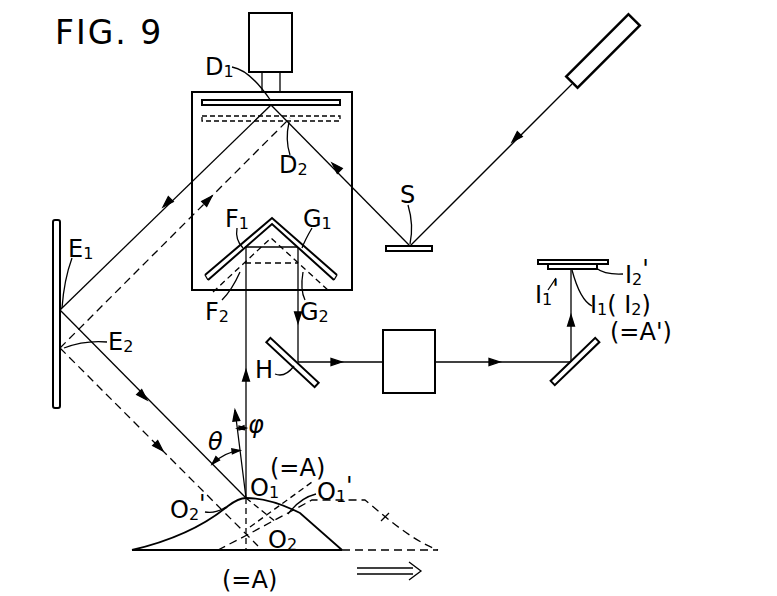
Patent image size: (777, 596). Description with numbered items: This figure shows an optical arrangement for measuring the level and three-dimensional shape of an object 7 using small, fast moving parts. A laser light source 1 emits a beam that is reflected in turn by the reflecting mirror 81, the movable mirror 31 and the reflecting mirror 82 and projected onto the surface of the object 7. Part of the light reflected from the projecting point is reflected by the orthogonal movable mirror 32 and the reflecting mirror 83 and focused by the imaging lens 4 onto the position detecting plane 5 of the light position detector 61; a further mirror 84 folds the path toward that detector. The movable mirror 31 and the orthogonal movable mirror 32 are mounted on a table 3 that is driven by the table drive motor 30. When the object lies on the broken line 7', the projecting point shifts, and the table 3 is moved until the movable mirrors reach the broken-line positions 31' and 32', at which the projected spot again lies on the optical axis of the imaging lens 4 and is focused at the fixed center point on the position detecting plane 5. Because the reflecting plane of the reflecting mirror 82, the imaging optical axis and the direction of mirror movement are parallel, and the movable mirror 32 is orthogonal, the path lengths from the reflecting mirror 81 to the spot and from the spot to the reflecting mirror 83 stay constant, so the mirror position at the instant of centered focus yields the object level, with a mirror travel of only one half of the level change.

The laser light source 1 is at (613, 52).
The table 3 is at (352, 131).
The imaging lens 4 is at (401, 393).
The position detecting plane 5 is at (590, 262).
The object 7 is at (237, 545).
The broken line position of object 7' is at (328, 516).
The table drive motor 30 is at (292, 24).
The movable mirror 31 is at (280, 79).
The broken line position of movable mirror 31' is at (245, 138).
The orthogonal movable mirror 32 is at (298, 253).
The broken line position of orthogonal movable mirror 32' is at (318, 275).
The light position detector 61 is at (553, 264).
The reflecting mirror 81 is at (424, 252).
The reflecting mirror 82 is at (53, 372).
The reflecting mirror 83 is at (309, 386).
The mirror 84 is at (568, 382).